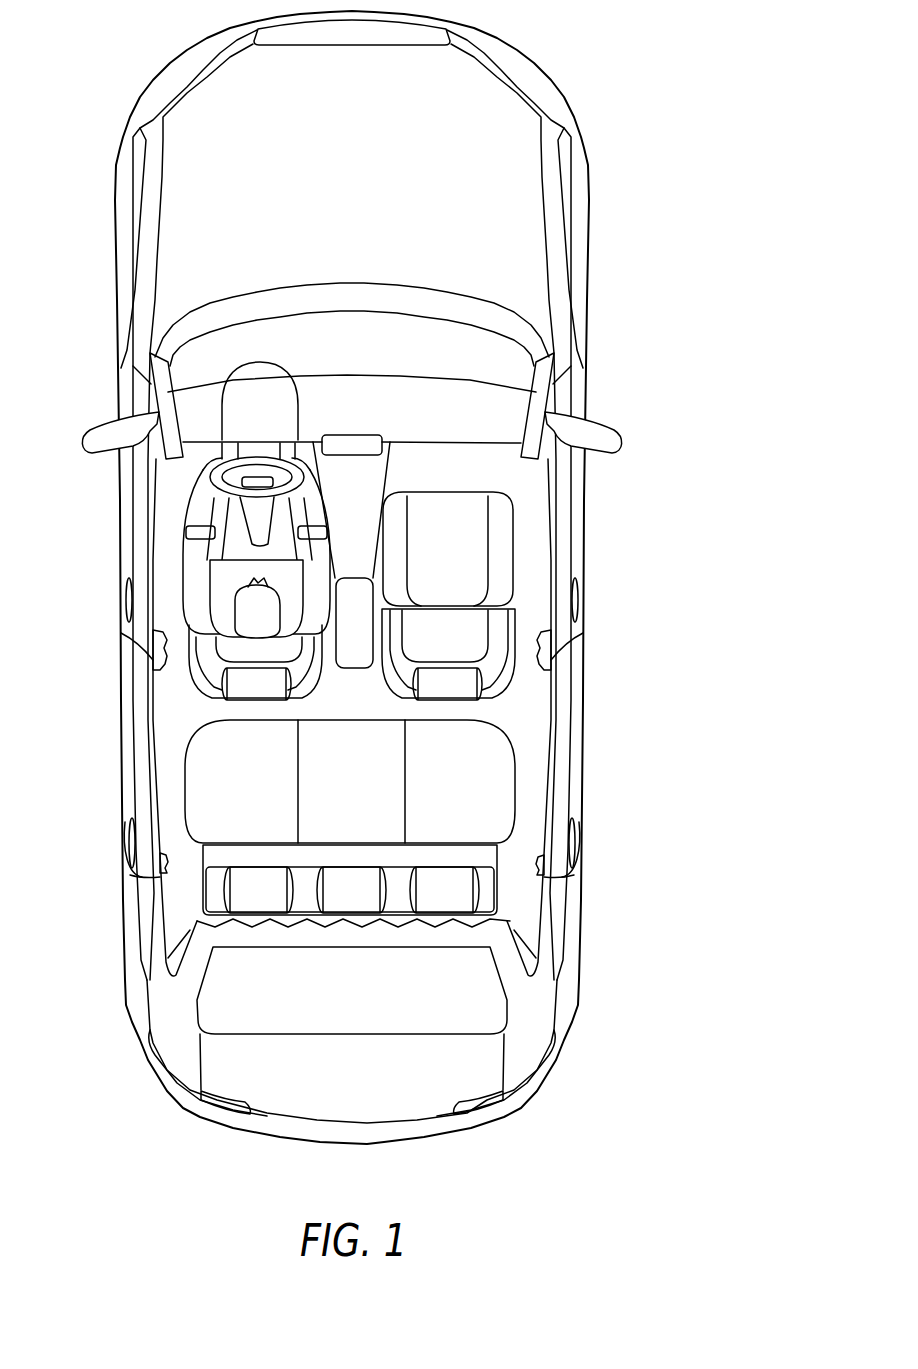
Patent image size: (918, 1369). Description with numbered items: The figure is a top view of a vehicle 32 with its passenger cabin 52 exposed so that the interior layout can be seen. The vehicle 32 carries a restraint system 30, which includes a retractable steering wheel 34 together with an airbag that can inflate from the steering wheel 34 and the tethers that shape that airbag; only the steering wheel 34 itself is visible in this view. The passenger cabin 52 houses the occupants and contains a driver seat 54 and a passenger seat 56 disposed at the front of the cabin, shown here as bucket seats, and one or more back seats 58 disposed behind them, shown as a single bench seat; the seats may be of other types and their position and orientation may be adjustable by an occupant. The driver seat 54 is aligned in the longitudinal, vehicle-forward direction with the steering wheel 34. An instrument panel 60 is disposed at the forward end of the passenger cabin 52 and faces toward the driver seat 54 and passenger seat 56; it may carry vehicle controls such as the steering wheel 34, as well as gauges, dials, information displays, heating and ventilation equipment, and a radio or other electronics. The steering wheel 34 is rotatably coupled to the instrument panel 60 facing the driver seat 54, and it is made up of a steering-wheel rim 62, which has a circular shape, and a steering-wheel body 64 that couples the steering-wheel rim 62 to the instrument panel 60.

The restraint system 30 is at (188, 478).
The vehicle 32 is at (654, 97).
The retractable steering wheel 34 is at (227, 441).
The passenger cabin 52 is at (520, 709).
The driver seat 54 is at (190, 677).
The passenger seat 56 is at (517, 627).
The back seats 58 is at (518, 797).
The instrument panel 60 is at (420, 443).
The steering-wheel rim 62 is at (262, 452).
The steering-wheel body 64 is at (293, 475).